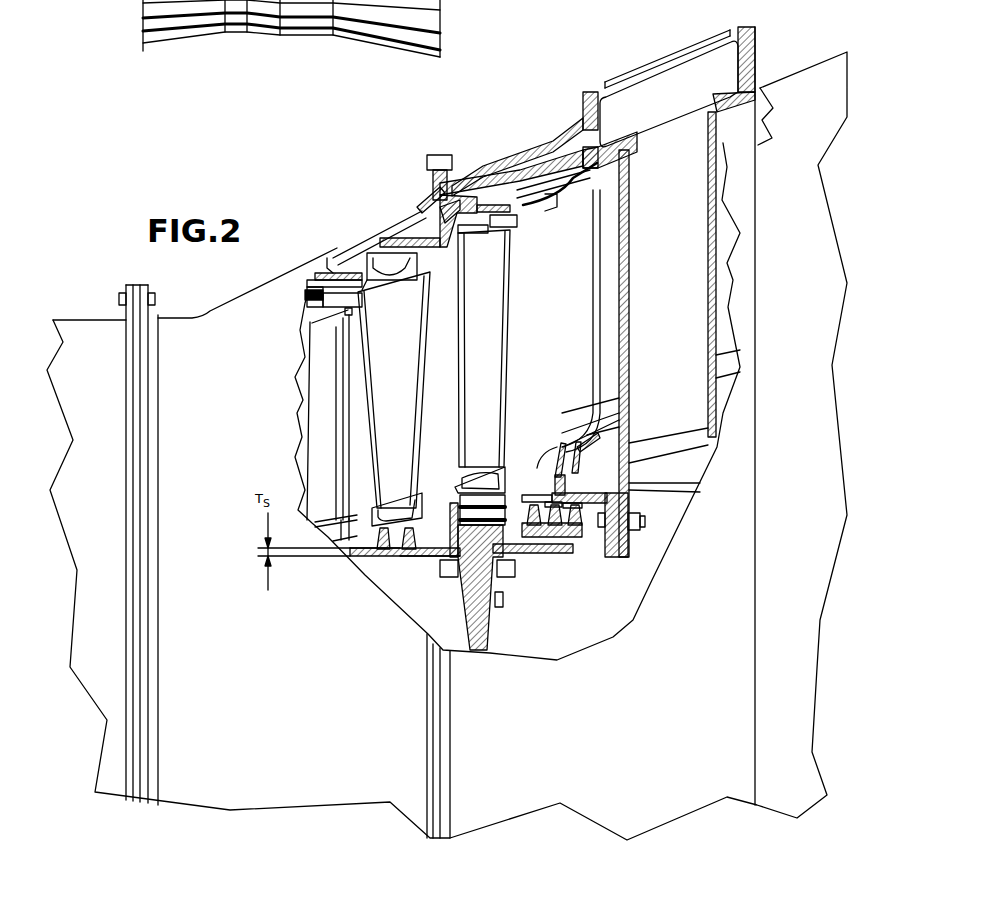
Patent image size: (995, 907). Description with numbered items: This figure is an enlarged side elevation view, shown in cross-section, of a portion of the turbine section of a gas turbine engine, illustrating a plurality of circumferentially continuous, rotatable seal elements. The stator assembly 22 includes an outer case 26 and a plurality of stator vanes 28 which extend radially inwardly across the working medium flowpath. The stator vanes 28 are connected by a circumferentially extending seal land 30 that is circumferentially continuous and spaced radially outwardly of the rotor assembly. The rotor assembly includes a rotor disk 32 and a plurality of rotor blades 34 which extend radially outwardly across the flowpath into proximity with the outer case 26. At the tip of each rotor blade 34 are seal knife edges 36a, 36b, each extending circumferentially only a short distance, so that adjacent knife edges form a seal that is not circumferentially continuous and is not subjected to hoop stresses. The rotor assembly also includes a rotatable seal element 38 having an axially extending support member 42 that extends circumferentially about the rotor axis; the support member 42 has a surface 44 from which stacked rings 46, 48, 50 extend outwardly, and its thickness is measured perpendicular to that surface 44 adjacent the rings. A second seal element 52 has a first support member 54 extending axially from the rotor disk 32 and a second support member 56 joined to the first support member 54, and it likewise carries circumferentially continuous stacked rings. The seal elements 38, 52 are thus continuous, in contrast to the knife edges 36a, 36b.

The stator assembly 22 is at (806, 60).
The outer case 26 is at (582, 108).
The stator vanes 28 is at (382, 346).
The seal land 30 is at (422, 510).
The rotor disk 32 is at (486, 592).
The rotor blades 34 is at (490, 384).
The seal knife edge 36a is at (507, 230).
The seal knife edge 36b is at (460, 242).
The rotatable seal element 38 is at (384, 566).
The support member 42 is at (373, 556).
The surface 44 is at (366, 548).
The ring 46 is at (426, 557).
The ring 48 is at (411, 547).
The ring 50 is at (403, 548).
The second seal element 52 is at (580, 568).
The first support member 54 is at (533, 553).
The second support member 56 is at (583, 532).